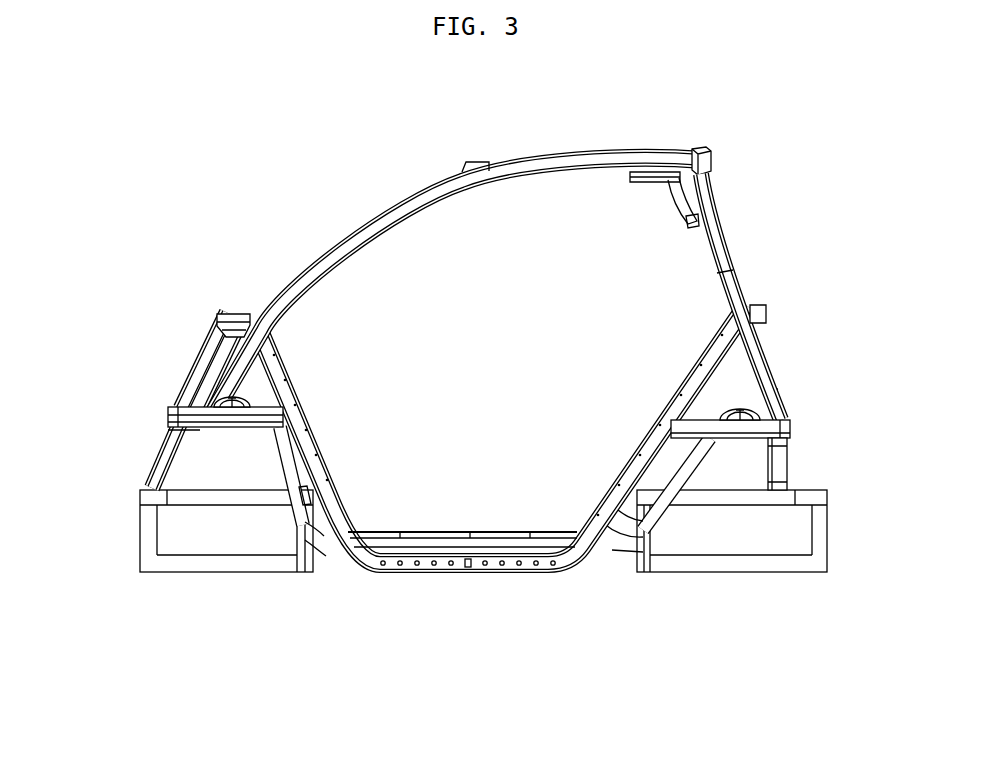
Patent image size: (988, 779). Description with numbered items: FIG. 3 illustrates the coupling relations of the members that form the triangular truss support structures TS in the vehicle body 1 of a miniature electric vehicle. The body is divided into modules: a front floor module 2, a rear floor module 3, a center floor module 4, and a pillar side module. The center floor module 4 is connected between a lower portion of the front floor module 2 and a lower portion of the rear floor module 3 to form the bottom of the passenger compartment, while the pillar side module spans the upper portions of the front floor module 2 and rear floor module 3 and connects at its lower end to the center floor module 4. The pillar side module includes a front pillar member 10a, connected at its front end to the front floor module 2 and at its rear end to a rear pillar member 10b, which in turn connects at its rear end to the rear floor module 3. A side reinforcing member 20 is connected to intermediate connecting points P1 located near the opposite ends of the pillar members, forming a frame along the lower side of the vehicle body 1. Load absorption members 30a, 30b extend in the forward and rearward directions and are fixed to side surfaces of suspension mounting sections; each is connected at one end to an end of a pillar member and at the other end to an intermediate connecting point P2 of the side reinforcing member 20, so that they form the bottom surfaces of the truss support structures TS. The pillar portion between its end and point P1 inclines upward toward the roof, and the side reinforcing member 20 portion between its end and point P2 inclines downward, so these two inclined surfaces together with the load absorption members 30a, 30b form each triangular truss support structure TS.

The vehicle body 1 is at (383, 209).
The front floor module 2 is at (232, 598).
The rear floor module 3 is at (747, 598).
The center floor module 4 is at (488, 598).
The front pillar member 10a is at (305, 272).
The rear pillar member 10b is at (712, 230).
The side reinforcing member 20 is at (284, 392).
The load absorption member 30a is at (230, 415).
The load absorption member 30b is at (730, 430).
The intermediate connecting point P1 is at (256, 330).
The intermediate connecting point P2 is at (282, 416).
The triangular truss support structure TS is at (208, 376).